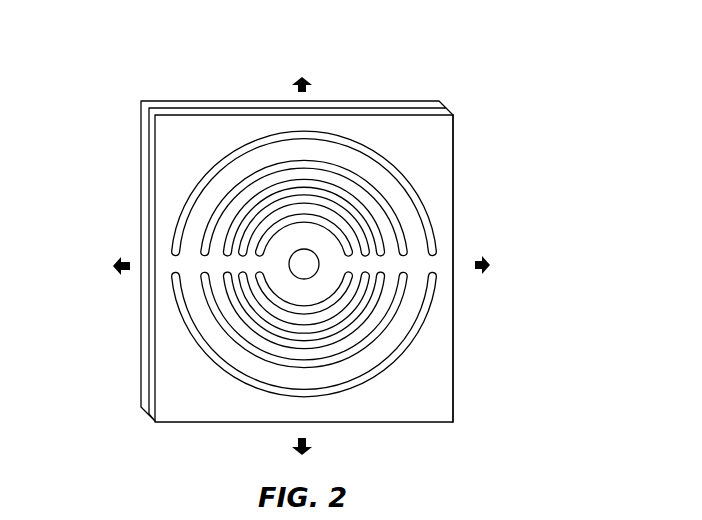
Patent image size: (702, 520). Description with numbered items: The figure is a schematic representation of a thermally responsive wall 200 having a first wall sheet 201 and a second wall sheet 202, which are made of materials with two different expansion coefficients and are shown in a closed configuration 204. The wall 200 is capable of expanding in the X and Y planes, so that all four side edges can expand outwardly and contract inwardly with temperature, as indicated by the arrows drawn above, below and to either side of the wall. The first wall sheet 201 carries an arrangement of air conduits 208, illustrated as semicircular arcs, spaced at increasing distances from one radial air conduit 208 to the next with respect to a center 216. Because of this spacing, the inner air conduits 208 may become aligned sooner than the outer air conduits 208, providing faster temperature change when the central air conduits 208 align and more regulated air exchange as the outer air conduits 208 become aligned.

The wall 200 is at (302, 237).
The first wall sheet 201 is at (430, 135).
The second wall sheet 202 is at (146, 100).
The closed configuration 204 is at (456, 350).
The air conduits 208 is at (433, 228).
The center 216 is at (304, 270).